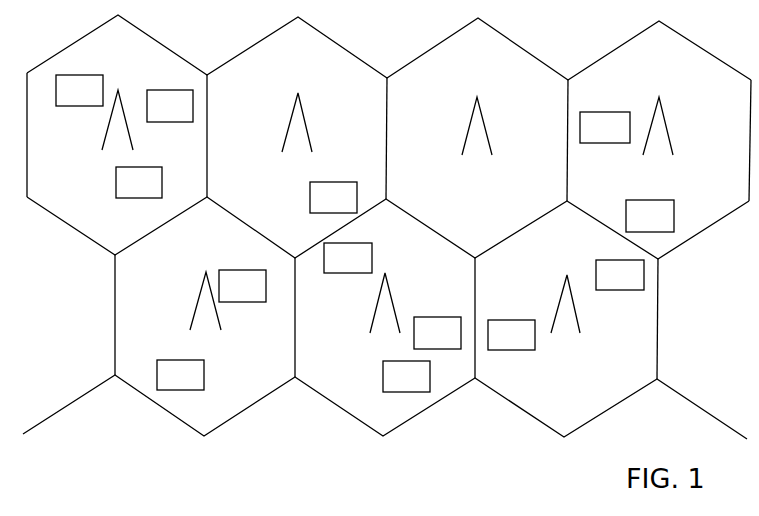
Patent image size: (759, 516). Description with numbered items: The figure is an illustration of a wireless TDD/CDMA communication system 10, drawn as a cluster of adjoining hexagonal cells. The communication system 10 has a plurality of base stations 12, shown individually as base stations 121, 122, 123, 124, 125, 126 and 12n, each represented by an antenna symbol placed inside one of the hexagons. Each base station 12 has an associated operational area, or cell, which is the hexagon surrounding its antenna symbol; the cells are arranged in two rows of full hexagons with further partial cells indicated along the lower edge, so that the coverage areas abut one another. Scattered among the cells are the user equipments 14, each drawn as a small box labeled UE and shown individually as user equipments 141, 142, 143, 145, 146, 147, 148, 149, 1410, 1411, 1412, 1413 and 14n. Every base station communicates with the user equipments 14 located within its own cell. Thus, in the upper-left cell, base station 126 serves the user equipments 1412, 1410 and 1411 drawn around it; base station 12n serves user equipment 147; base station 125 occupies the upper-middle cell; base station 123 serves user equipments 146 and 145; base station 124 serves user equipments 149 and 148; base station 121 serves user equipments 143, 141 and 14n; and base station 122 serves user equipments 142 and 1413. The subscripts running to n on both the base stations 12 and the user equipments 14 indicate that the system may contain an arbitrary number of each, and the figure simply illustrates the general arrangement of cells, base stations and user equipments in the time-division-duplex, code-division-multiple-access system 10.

The wireless TDD/CDMA communication system 10 is at (387, 227).
The base station 12 is at (390, 226).
The base station 121 is at (370, 318).
The base station 122 is at (575, 319).
The base station 123 is at (675, 126).
The base station 124 is at (190, 301).
The base station 125 is at (495, 126).
The base station 126 is at (102, 134).
The base station 12n is at (314, 122).
The user equipment 14 is at (366, 237).
The user equipment 141 is at (440, 321).
The user equipment 142 is at (513, 321).
The user equipment 143 is at (356, 246).
The user equipment 145 is at (651, 204).
The user equipment 146 is at (605, 114).
The user equipment 147 is at (334, 186).
The user equipment 148 is at (182, 390).
The user equipment 149 is at (244, 274).
The user equipment 1410 is at (173, 95).
The user equipment 1411 is at (137, 197).
The user equipment 1412 is at (83, 79).
The user equipment 1413 is at (622, 290).
The user equipment 14n is at (399, 392).